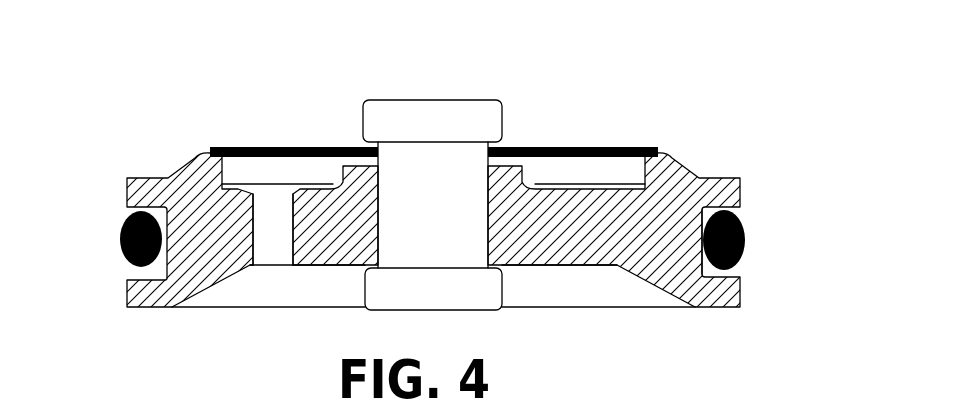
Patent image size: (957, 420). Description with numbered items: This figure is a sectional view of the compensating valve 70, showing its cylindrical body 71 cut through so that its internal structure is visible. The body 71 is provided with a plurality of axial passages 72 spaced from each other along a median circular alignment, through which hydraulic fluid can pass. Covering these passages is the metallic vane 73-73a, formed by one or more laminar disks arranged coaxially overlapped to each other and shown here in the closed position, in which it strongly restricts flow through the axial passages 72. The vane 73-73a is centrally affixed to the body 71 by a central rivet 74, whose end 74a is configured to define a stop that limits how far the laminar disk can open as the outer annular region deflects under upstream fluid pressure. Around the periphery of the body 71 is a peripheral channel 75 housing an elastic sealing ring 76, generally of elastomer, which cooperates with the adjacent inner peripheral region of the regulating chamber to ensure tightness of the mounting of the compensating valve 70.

The compensating valve 70 is at (150, 147).
The cylindrical body 71 is at (675, 217).
The axial passage 72 is at (257, 227).
The metallic vane / laminar disk 73-73a is at (593, 148).
The central rivet 74 is at (383, 168).
The rivet end 74a is at (383, 119).
The peripheral channel 75 is at (738, 272).
The elastic sealing ring 76 is at (745, 231).